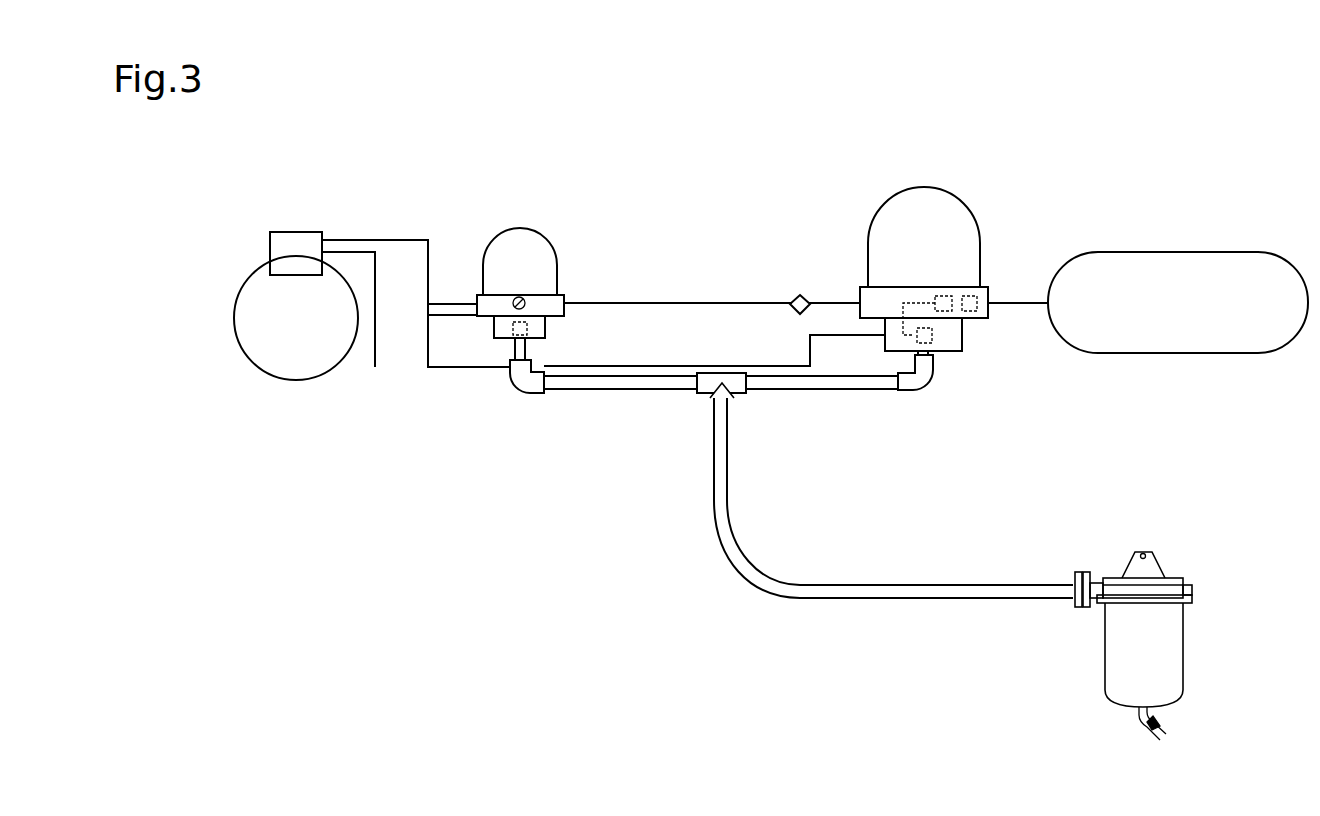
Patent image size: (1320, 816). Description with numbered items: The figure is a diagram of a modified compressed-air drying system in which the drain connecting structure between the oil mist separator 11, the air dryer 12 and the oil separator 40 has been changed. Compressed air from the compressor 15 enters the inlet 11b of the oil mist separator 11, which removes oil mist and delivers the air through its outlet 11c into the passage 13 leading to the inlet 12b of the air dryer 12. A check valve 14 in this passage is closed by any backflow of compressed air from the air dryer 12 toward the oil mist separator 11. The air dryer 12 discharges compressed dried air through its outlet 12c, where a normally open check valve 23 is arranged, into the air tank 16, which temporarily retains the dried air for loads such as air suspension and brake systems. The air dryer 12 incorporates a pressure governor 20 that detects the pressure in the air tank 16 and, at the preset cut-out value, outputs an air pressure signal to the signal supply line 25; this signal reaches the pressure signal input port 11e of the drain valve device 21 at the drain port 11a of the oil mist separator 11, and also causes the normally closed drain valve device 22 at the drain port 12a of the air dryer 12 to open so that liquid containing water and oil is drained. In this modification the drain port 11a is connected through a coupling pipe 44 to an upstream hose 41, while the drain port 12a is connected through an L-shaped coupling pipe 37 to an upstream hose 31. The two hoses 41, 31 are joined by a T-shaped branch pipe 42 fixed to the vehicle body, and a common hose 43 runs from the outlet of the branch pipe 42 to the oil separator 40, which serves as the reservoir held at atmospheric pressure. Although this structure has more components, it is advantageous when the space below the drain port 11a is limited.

The oil mist separator 11 is at (535, 236).
The drain port 11a is at (540, 338).
The inlet 11b is at (477, 303).
The outlet 11c is at (564, 303).
The pressure signal input port 11e is at (519, 297).
The air dryer 12 is at (948, 191).
The drain port 12a is at (885, 352).
The inlet 12b is at (860, 293).
The outlet 12c is at (989, 298).
The passage 13 is at (667, 303).
The check valve 14 is at (800, 295).
The compressor 15 is at (233, 316).
The air tank 16 is at (1207, 252).
The pressure governor 20 is at (940, 296).
The drain valve device 21 is at (528, 330).
The drain valve device 22 is at (933, 341).
The check valve 23 is at (968, 313).
The signal supply line 25 is at (680, 366).
The upstream hose 31 is at (808, 393).
The coupling pipe 37 is at (928, 392).
The oil separator 40 is at (1177, 578).
The upstream hose 41 is at (596, 390).
The branch pipe 42 is at (705, 394).
The common hose 43 is at (714, 515).
The coupling pipe 44 is at (528, 395).